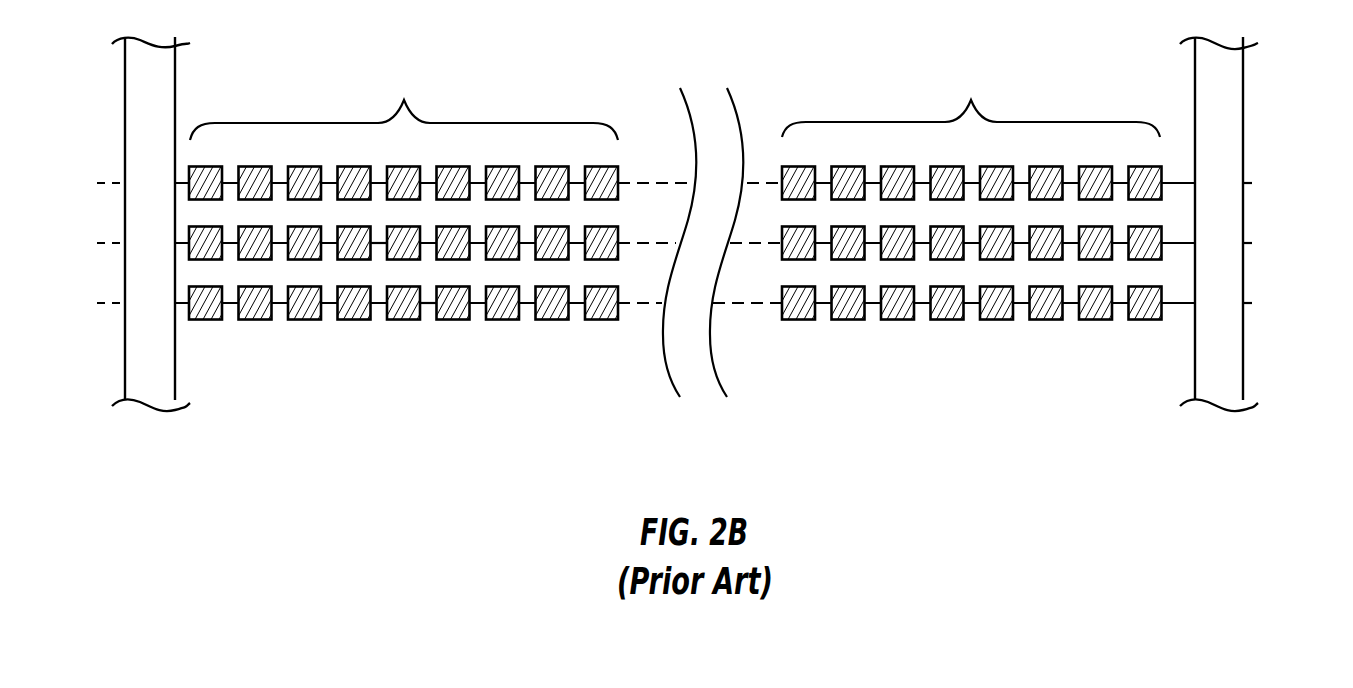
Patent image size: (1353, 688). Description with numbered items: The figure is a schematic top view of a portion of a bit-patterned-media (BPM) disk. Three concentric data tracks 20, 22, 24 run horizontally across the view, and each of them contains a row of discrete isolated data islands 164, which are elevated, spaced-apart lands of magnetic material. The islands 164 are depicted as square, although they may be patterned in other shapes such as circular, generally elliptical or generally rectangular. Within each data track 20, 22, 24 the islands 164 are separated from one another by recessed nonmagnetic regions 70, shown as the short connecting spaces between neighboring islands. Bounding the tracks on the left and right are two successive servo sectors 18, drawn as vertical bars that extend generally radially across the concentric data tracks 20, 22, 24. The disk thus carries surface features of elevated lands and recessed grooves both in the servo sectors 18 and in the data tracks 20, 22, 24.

The servo sector 18 is at (157, 80).
The data islands 164 is at (678, 191).
The recessed nonmagnetic regions 70 is at (377, 260).
The data track 24 is at (1260, 183).
The data track 22 is at (1260, 243).
The data track 20 is at (1260, 303).